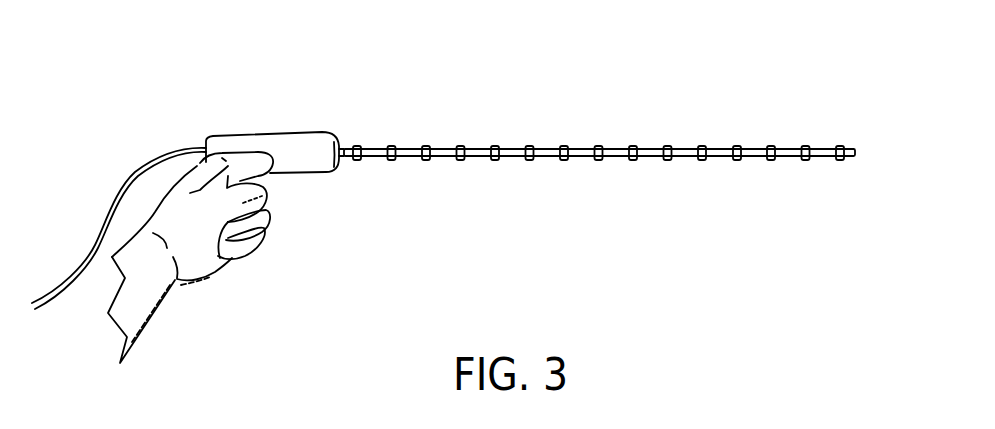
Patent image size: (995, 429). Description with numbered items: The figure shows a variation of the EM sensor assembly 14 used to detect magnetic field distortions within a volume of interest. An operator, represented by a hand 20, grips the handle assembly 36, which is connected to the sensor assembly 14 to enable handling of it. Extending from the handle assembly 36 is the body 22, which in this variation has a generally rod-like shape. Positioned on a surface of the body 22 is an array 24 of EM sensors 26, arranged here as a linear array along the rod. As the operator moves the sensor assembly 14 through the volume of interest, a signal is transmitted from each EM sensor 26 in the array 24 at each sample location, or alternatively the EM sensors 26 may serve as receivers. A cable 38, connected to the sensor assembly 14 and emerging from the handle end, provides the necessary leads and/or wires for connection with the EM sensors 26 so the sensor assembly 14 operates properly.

The EM sensor assembly 14 is at (572, 86).
The hand 20 is at (214, 276).
The body 22 is at (447, 147).
The array 24 is at (636, 162).
The EM sensors 26 is at (740, 146).
The handle assembly 36 is at (268, 133).
The cable 38 is at (158, 151).